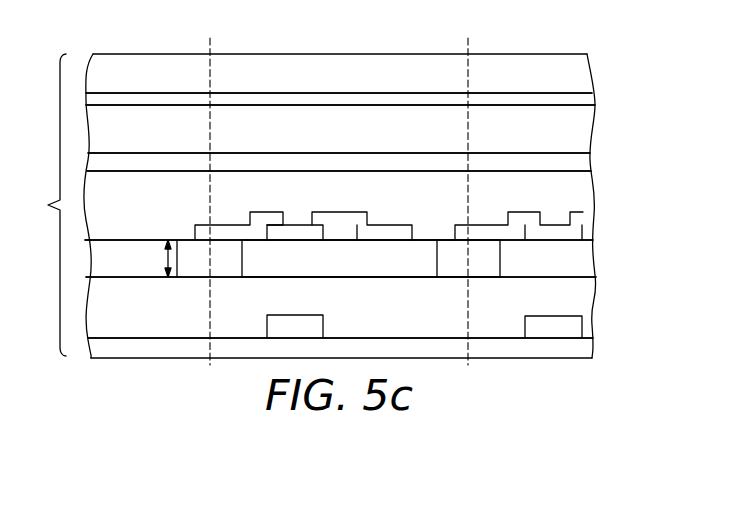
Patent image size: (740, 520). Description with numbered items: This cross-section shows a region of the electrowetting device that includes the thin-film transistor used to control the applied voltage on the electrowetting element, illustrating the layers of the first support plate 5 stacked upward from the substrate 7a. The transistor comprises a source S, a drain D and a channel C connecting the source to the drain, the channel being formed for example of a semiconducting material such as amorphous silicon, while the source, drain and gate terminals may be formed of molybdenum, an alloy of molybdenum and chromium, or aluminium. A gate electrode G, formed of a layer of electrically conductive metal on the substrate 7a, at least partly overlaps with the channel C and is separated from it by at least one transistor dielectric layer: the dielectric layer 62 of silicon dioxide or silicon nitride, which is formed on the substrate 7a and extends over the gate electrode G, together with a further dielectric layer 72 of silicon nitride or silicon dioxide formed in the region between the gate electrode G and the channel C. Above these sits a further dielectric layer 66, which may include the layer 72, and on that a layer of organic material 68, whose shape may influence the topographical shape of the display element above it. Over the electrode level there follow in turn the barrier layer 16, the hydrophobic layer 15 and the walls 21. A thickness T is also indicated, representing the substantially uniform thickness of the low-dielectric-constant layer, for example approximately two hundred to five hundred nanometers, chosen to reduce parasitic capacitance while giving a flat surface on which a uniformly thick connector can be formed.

The first support plate 5 is at (48, 205).
The substrate 7a is at (580, 349).
The hydrophobic layer 15 is at (588, 98).
The barrier layer 16 is at (586, 121).
The walls 21 is at (580, 71).
The dielectric layer 62 is at (578, 296).
The further dielectric layer 66 is at (574, 196).
The layer of organic material 68 is at (586, 158).
The further dielectric layer 72 is at (375, 270).
The source S is at (267, 215).
The drain D is at (338, 215).
The channel C is at (297, 232).
The gate electrode G is at (268, 323).
The thickness T is at (159, 258).